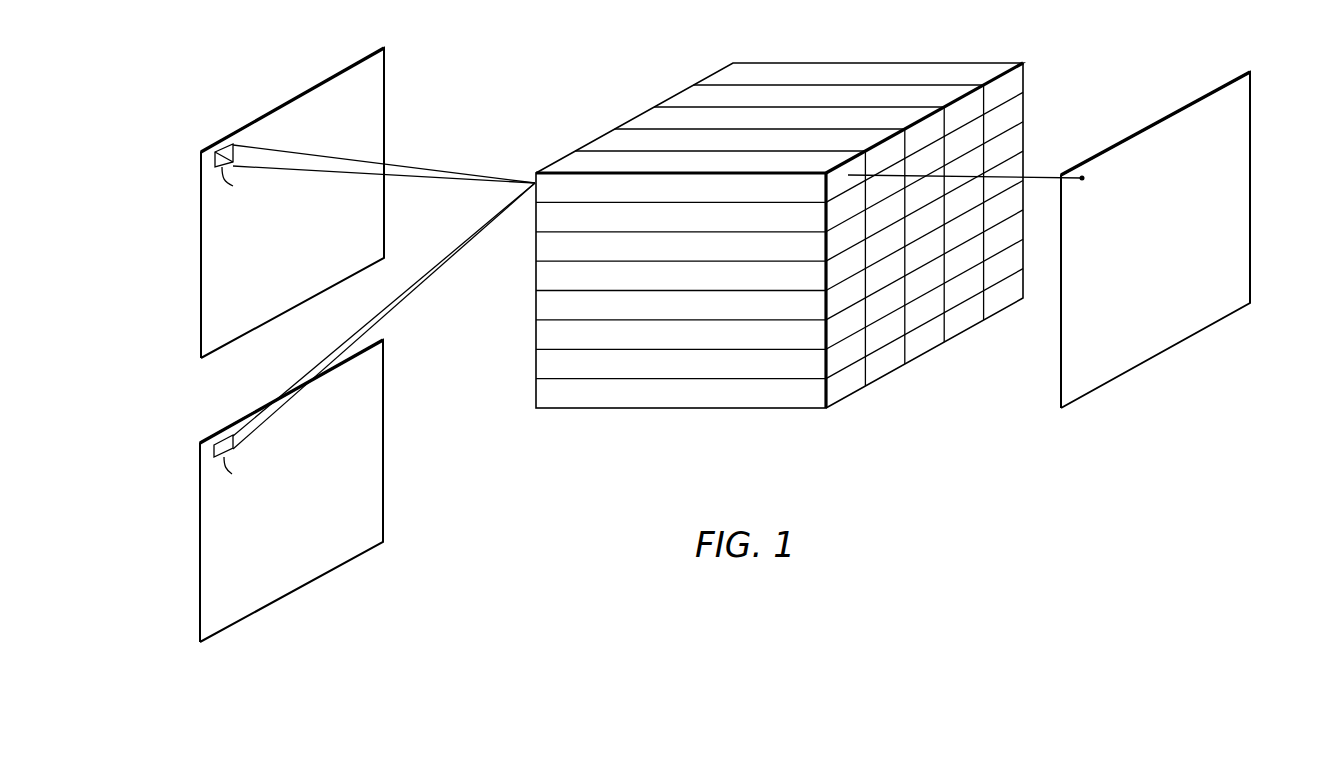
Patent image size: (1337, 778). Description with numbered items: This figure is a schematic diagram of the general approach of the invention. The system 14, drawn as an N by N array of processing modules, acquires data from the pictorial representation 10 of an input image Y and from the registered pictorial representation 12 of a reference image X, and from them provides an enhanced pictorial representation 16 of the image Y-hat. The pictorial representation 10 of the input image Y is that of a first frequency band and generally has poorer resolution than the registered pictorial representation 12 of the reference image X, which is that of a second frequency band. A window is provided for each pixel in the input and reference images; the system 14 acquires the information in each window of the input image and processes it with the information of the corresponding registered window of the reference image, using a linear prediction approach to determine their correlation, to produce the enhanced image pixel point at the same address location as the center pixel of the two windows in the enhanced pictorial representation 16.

The pictorial representation of input image Y 10 is at (383, 416).
The registered pictorial representation of reference image X 12 is at (384, 141).
The system 14 is at (849, 52).
The enhanced pictorial representation 16 is at (1250, 161).